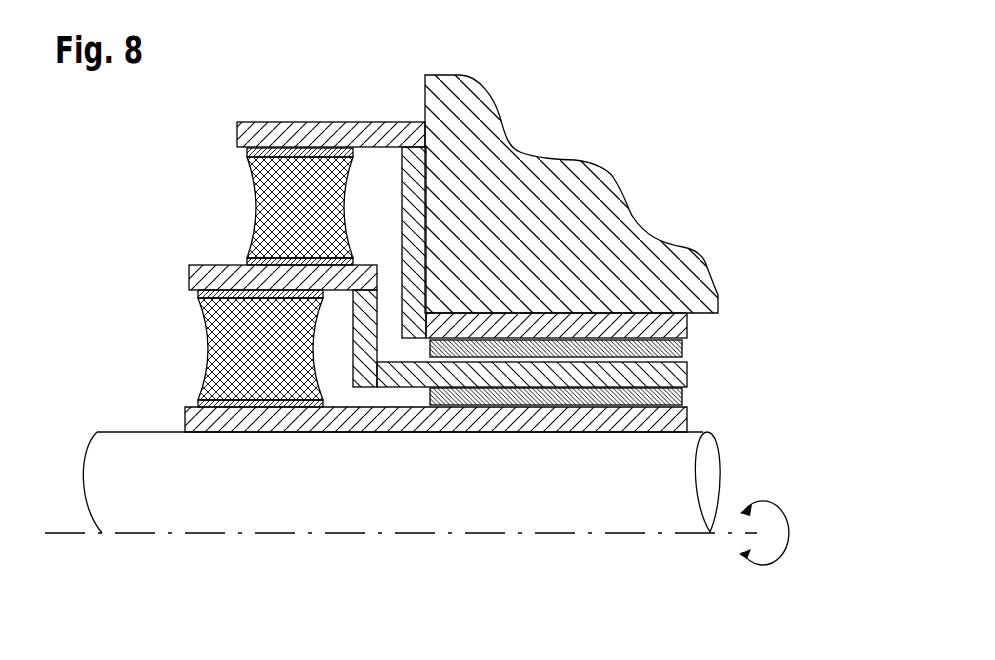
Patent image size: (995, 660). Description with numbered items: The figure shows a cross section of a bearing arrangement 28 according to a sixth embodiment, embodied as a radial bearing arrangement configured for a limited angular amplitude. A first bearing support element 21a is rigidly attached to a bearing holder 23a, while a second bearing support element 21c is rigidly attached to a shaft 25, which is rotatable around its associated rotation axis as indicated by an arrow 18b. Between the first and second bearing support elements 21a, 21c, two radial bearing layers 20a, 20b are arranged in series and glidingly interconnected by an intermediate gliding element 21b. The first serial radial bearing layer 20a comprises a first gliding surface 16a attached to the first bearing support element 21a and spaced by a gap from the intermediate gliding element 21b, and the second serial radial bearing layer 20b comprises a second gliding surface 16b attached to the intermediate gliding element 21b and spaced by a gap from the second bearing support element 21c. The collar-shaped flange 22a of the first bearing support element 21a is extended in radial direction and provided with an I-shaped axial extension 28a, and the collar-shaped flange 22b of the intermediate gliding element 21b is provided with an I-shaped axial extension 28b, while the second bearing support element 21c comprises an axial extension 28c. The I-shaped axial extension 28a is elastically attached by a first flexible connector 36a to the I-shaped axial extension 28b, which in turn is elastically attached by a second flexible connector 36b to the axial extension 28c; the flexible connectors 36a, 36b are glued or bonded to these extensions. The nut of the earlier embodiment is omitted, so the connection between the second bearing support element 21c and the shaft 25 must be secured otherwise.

The bearing arrangement 28 is at (188, 140).
The I-shaped axial extension 28a is at (280, 135).
The I-shaped axial extension 28b is at (220, 278).
The axial extension 28c is at (213, 423).
The first flexible connector 36a is at (277, 220).
The second flexible connector 36b is at (240, 358).
The collar-shaped flange 22a is at (413, 207).
The collar-shaped flange 22b is at (365, 336).
The bearing holder 23a is at (570, 192).
The first bearing support element 21a is at (673, 313).
The intermediate gliding element 21b is at (665, 375).
The second bearing support element 21c is at (665, 420).
The first gliding surface 16a is at (680, 348).
The second gliding surface 16b is at (677, 395).
The first serial radial bearing layer 20a is at (705, 357).
The second serial radial bearing layer 20b is at (712, 408).
The shaft 25 is at (497, 507).
The arrow 18b is at (762, 568).